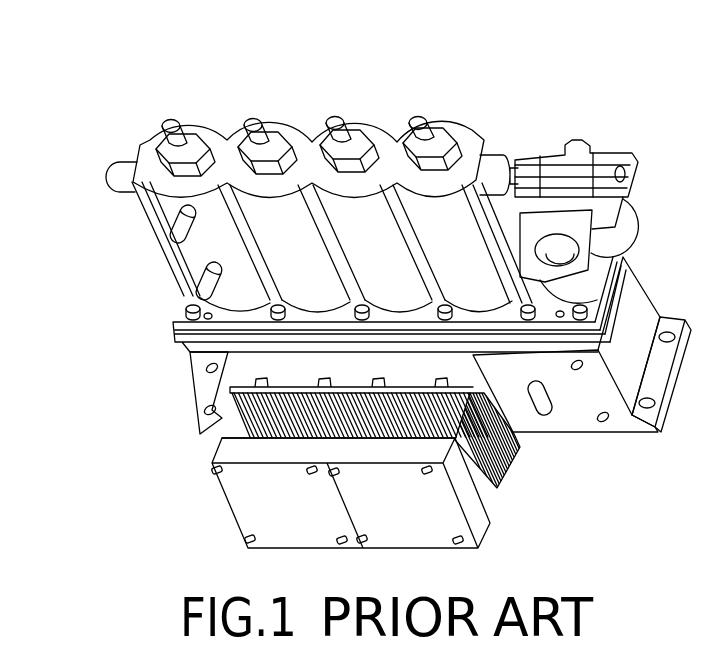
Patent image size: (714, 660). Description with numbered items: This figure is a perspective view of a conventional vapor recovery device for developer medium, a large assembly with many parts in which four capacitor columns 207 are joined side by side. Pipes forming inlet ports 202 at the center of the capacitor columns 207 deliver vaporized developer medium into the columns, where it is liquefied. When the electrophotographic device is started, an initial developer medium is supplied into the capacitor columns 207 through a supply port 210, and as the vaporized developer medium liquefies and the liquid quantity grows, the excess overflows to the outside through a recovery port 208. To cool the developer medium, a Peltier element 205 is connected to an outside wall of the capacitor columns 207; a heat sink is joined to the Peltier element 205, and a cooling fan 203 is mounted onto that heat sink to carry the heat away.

The inlet port 202 is at (416, 116).
The capacitor column 207 is at (468, 128).
The supply port 210 is at (176, 219).
The recovery port 208 is at (198, 285).
The Peltier element 205 is at (494, 476).
The cooling fan 203 is at (480, 526).